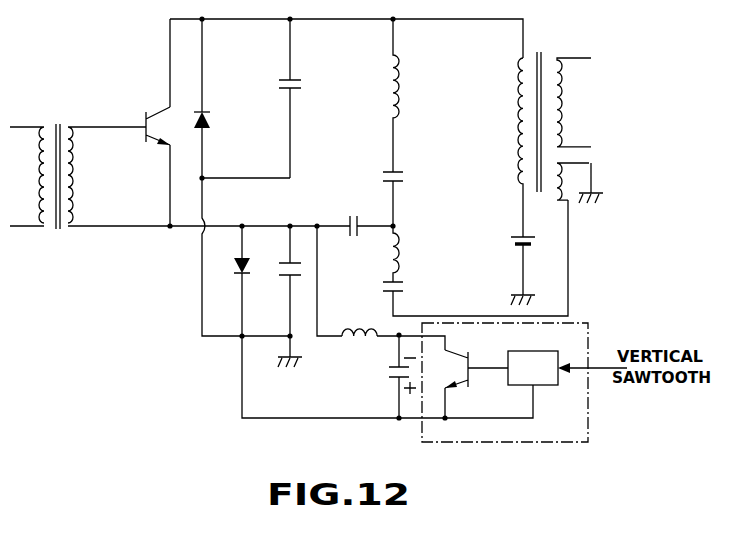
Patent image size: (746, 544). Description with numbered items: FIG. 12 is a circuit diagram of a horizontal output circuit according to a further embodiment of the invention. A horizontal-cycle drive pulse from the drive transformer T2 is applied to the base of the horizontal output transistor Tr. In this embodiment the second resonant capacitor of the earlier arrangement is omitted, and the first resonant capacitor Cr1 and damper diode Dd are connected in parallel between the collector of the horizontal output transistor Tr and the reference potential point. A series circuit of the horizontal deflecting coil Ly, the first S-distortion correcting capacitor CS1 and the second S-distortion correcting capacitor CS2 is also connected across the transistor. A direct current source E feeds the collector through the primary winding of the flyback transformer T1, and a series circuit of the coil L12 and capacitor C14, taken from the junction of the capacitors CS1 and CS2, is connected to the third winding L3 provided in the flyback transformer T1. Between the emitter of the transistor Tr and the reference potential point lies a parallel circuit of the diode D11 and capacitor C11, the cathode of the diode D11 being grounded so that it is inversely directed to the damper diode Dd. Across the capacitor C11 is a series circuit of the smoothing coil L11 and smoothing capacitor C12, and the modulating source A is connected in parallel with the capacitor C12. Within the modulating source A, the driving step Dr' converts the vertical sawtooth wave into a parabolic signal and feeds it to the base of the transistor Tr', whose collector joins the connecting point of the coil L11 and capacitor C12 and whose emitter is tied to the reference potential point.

The drive transformer T2 is at (78, 166).
The horizontal output transistor Tr is at (147, 114).
The damper diode Dd is at (217, 120).
The first resonant capacitor Cr1 is at (308, 98).
The horizontal deflecting coil Ly is at (408, 95).
The first S-distortion correcting capacitor CS1 is at (412, 197).
The second S-distortion correcting capacitor CS2 is at (353, 216).
The coil L12 is at (413, 254).
The capacitor C14 is at (409, 291).
The flyback transformer T1 is at (554, 138).
The direct current source E is at (515, 269).
The third winding L3 is at (567, 184).
The diode D11 is at (229, 281).
The capacitor C11 is at (281, 296).
The smoothing coil L11 is at (359, 345).
The smoothing capacitor C12 is at (386, 376).
The transistor Tr' is at (476, 361).
The driving step Dr' is at (567, 368).
The modulating source A is at (584, 323).